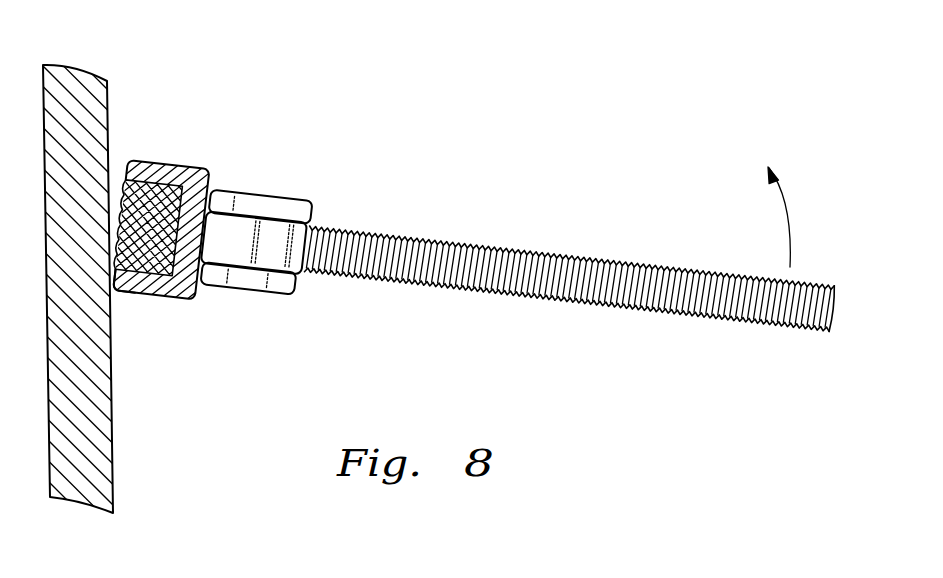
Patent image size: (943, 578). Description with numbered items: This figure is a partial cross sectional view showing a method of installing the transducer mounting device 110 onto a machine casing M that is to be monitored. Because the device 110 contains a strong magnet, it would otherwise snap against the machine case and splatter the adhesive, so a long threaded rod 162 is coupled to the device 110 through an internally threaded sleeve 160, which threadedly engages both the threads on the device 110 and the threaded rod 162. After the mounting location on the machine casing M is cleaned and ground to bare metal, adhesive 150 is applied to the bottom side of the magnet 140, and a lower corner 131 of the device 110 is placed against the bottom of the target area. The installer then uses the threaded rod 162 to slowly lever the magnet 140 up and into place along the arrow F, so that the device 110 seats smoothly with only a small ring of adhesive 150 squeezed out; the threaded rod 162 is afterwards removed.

The machine casing M is at (67, 83).
The transducer mounting device 110 is at (223, 150).
The lower corner 131 is at (113, 283).
The magnetic component 140 is at (176, 210).
The adhesive 150 is at (121, 175).
The internally threaded sleeve 160 is at (288, 207).
The threaded rod 162 is at (457, 242).
The arrow F is at (787, 220).